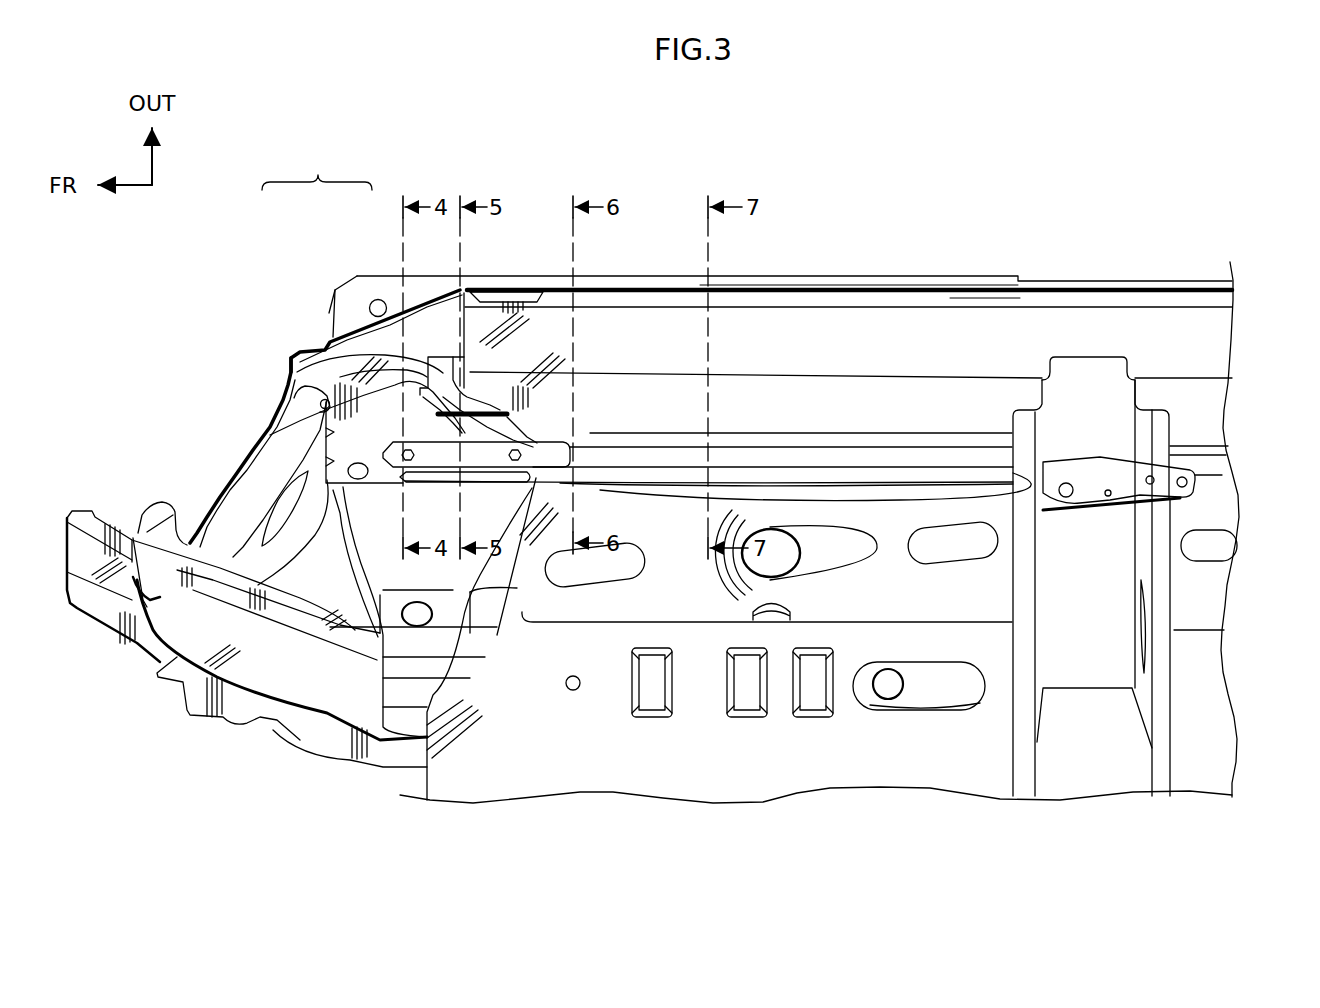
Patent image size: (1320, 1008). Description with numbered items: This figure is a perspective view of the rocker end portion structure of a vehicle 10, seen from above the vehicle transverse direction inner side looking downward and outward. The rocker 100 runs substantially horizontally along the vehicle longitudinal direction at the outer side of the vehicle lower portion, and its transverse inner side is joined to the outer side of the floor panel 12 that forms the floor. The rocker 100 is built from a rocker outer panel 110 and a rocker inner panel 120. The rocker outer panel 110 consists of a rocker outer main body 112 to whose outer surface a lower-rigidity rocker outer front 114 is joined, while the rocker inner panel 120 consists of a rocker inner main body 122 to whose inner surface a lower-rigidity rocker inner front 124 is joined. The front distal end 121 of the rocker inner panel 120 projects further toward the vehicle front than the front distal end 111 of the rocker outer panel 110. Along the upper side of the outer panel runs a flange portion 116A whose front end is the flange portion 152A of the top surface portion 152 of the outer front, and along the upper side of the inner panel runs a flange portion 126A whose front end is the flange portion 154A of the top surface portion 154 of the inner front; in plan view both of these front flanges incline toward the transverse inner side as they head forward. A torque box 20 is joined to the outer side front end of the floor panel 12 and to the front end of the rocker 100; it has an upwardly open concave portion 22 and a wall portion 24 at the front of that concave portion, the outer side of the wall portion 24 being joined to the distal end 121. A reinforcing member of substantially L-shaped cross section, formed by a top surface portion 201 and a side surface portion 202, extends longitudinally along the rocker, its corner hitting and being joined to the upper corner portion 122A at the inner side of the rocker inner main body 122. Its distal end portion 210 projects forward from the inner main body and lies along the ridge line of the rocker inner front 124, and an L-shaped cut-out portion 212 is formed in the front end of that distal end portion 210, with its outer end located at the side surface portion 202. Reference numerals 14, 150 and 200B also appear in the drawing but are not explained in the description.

The vehicle 10 is at (1169, 170).
The rocker 100 is at (1203, 246).
The rocker outer panel 110 is at (1051, 276).
The distal end 111 is at (329, 313).
The rocker outer main body 112 is at (1112, 282).
The rocker outer front 114 is at (500, 290).
The flange portion 116A is at (913, 287).
The rocker inner panel 120 is at (790, 326).
The distal end 121 is at (291, 358).
The rocker inner main body 122 is at (663, 343).
The upper corner portion 122A is at (1195, 378).
The rocker inner front 124 is at (362, 350).
The flange portion 126A is at (948, 300).
The floor panel 12 is at (933, 780).
The front cross member 14 is at (478, 706).
The reinforcement assembly 150 is at (317, 169).
The top surface portion 152 is at (381, 283).
The flange portion 152A is at (477, 339).
The top surface portion 154 is at (350, 345).
The flange portion 154A is at (467, 349).
The torque box 20 is at (320, 582).
The bracket flange 200B is at (477, 395).
The top surface portion 201 is at (395, 375).
The side surface portion 202 is at (330, 447).
The distal end portion 210 is at (490, 440).
The cut-out portion 212 is at (323, 413).
The concave portion 22 is at (380, 640).
The wall portion 24 is at (237, 507).